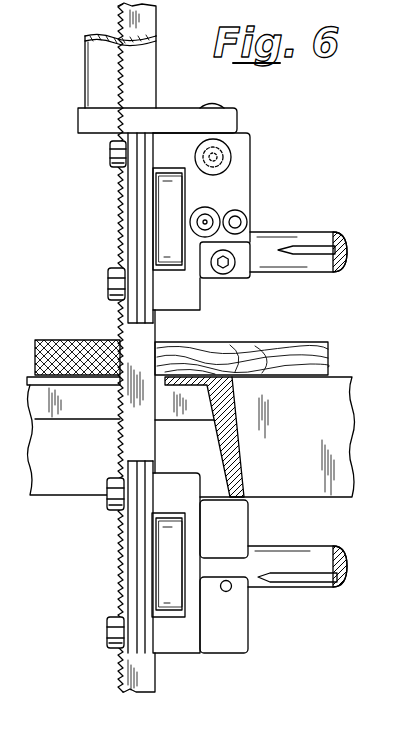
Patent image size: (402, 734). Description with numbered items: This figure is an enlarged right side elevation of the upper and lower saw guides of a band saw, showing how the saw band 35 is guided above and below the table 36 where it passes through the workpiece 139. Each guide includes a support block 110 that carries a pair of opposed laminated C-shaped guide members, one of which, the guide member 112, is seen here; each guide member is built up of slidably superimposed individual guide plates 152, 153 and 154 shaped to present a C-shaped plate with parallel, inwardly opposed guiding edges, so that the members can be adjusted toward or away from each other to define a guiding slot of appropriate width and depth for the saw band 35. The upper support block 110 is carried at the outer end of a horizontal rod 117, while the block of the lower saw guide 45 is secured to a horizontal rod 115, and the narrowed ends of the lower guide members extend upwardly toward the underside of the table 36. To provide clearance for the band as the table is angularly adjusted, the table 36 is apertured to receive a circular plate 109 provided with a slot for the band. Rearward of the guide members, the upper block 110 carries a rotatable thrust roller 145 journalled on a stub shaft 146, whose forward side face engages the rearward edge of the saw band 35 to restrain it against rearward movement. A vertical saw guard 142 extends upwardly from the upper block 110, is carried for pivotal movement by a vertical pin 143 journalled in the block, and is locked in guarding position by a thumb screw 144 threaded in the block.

The saw band 35 is at (150, 337).
The table 36 is at (292, 483).
The lower saw guide 45 is at (139, 567).
The circular plate 109 is at (200, 397).
The support block 110 is at (162, 138).
The laminated C-shaped guide member 112 is at (134, 330).
The horizontal rod 115 is at (290, 580).
The horizontal rod 117 is at (287, 232).
The workpiece 139 is at (280, 343).
The saw guard 142 is at (107, 58).
The vertical pin 143 is at (215, 107).
The thumb screw 144 is at (233, 145).
The thrust roller 145 is at (178, 192).
The stub shaft 146 is at (188, 207).
The guide plate 152 is at (147, 223).
The guide plate 153 is at (138, 197).
The guide plate 154 is at (132, 177).